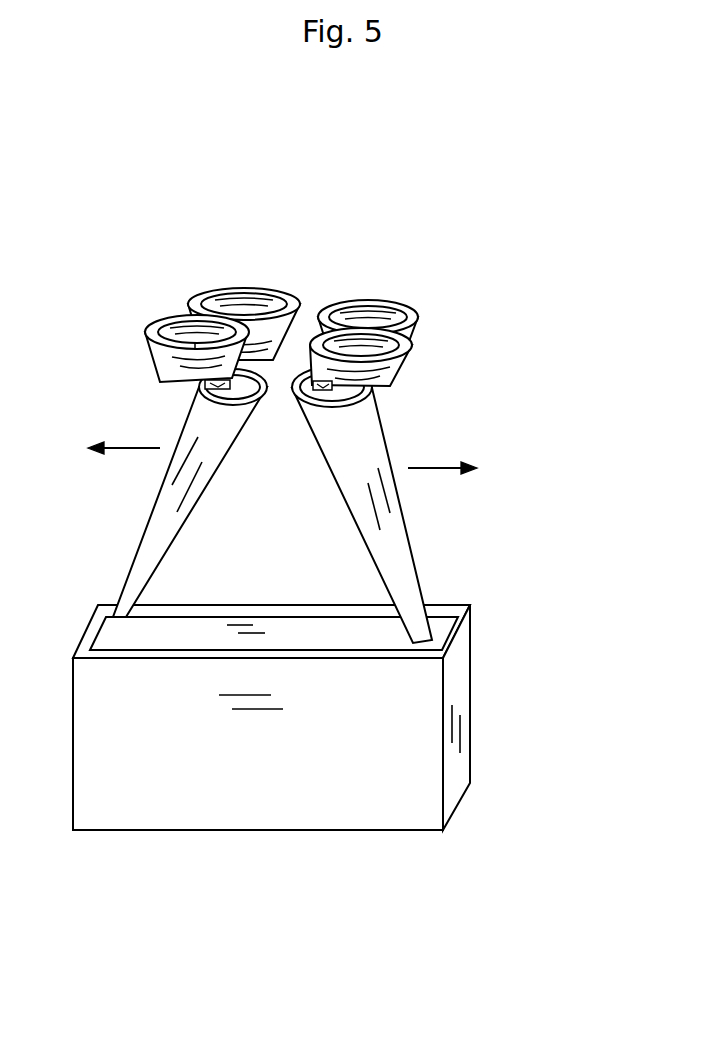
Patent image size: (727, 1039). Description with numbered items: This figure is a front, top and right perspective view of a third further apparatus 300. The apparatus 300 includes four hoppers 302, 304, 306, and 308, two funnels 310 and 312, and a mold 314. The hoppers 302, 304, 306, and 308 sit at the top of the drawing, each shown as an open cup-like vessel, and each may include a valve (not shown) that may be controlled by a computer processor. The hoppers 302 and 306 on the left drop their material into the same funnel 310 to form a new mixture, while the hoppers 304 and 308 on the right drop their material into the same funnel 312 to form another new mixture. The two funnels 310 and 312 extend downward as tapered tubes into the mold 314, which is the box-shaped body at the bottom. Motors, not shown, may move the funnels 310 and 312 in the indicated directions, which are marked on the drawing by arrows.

The third further apparatus 300 is at (446, 281).
The hopper 302 is at (228, 308).
The hopper 304 is at (352, 315).
The hopper 306 is at (160, 332).
The hopper 308 is at (395, 348).
The funnel 310 is at (143, 548).
The funnel 312 is at (407, 565).
The mold 314 is at (332, 792).